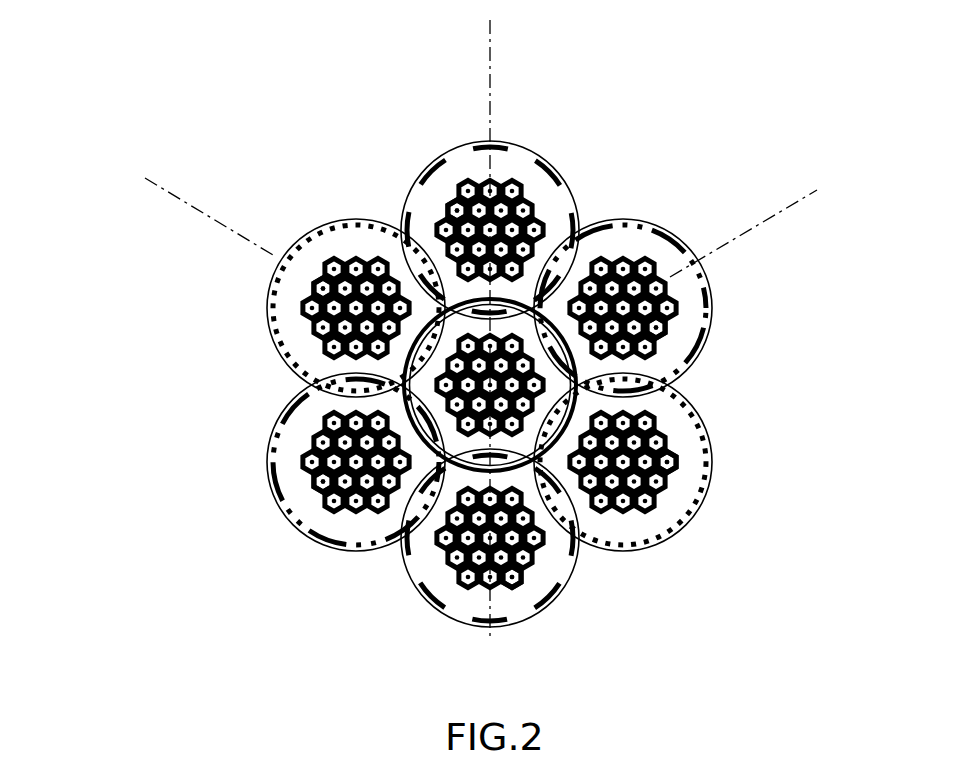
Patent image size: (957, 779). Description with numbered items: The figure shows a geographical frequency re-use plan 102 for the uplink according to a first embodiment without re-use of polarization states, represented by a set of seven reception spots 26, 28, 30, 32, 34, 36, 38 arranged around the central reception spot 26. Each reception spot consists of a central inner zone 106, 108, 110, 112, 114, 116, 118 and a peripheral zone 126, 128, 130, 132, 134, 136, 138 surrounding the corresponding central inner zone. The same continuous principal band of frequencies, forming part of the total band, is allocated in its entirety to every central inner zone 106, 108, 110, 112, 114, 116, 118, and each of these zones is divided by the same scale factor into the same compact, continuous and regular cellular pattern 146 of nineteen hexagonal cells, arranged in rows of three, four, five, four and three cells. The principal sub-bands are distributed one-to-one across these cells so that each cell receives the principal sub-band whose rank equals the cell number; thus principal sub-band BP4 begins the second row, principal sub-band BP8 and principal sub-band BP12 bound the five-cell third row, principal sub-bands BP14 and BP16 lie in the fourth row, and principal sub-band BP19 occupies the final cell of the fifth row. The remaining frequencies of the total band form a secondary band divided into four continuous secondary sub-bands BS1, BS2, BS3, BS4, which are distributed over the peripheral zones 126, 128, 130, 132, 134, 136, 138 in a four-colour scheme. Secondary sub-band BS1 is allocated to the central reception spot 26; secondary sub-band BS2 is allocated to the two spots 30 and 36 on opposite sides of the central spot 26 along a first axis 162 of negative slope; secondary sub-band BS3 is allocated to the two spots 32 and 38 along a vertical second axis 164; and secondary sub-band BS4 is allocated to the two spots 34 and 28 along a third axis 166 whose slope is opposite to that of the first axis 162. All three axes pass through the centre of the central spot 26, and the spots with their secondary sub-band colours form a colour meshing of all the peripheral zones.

The frequency re-use plan 102 is at (108, 134).
The central reception spot 26 is at (436, 450).
The reception spot 28 is at (313, 480).
The reception spot 30 is at (300, 277).
The reception spot 32 is at (460, 205).
The reception spot 34 is at (673, 281).
The reception spot 36 is at (672, 477).
The reception spot 38 is at (481, 569).
The central inner zone 106 is at (512, 425).
The central inner zone 108 is at (295, 467).
The central inner zone 110 is at (282, 308).
The central inner zone 112 is at (432, 185).
The central inner zone 114 is at (691, 262).
The central inner zone 116 is at (690, 459).
The central inner zone 118 is at (481, 580).
The peripheral zone 126 is at (452, 327).
The peripheral zone 128 is at (308, 430).
The peripheral zone 130 is at (290, 362).
The peripheral zone 132 is at (467, 168).
The peripheral zone 134 is at (687, 293).
The peripheral zone 136 is at (680, 477).
The peripheral zone 138 is at (480, 597).
The cellular pattern 146 is at (290, 252).
The first axis 162 is at (173, 195).
The second axis 164 is at (494, 42).
The third axis 166 is at (803, 193).
The secondary sub-band BS1 is at (448, 382).
The secondary sub-band BS2 is at (479, 402).
The secondary sub-band BS3 is at (489, 396).
The secondary sub-band BS4 is at (473, 379).
The principal sub-band BP4 is at (243, 286).
The principal sub-band BP8 is at (394, 156).
The principal sub-band BP12 is at (680, 462).
The principal sub-band BP14 is at (317, 482).
The principal sub-band BP16 is at (690, 332).
The principal sub-band BP19 is at (507, 583).